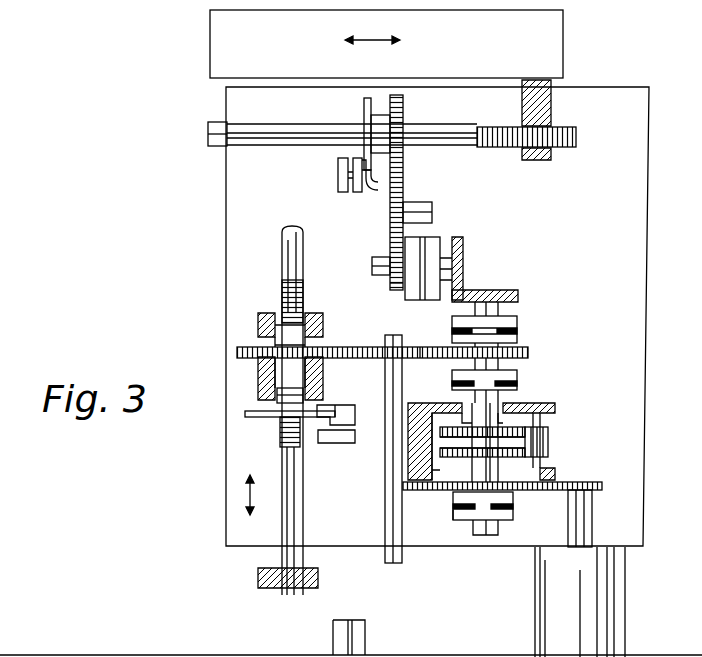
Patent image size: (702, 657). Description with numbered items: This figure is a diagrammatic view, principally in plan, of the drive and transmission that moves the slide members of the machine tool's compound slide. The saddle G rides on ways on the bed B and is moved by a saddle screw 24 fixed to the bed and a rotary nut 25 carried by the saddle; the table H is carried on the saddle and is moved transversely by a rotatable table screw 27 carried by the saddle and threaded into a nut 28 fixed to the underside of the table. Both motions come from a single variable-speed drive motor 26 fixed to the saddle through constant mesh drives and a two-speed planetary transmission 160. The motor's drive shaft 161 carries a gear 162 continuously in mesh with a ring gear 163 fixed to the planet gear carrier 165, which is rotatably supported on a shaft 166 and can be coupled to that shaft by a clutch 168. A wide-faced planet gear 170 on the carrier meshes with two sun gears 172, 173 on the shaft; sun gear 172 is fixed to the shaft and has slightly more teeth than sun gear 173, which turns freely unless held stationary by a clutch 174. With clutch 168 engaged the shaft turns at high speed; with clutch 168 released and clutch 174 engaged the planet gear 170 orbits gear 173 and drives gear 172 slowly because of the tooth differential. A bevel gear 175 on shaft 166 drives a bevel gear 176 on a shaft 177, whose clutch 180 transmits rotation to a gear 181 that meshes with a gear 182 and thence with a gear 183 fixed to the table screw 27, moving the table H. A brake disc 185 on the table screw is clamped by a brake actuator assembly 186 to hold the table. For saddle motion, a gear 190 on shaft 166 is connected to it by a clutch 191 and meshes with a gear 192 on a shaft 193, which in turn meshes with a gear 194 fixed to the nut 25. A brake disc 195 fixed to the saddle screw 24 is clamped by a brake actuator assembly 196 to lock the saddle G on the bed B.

The table H is at (209, 40).
The saddle G is at (224, 233).
The bed B is at (257, 578).
The saddle screw 24 is at (282, 247).
The rotary nut 25 is at (277, 392).
The variable-speed drive motor 26 is at (626, 597).
The table screw 27 is at (468, 128).
The nut 28 is at (551, 118).
The two-speed planetary transmission 160 is at (568, 422).
The drive shaft 161 is at (592, 522).
The gear 162 is at (602, 484).
The ring gear 163 is at (553, 492).
The planet gear carrier 165 is at (556, 408).
The shaft 166 is at (476, 536).
The clutch 168 is at (517, 381).
The planet gear 170 is at (549, 440).
The sun gear 172 is at (440, 430).
The sun gear 173 is at (440, 450).
The clutch 174 is at (453, 515).
The bevel gear 175 is at (515, 293).
The bevel gear 176 is at (464, 245).
The shaft 177 is at (372, 266).
The clutch 180 is at (432, 250).
The gear 181 is at (392, 288).
The gear 182 is at (403, 196).
The gear 183 is at (403, 116).
The brake disc 185 is at (363, 110).
The brake actuator assembly 186 is at (338, 178).
The gear 190 is at (528, 352).
The clutch 191 is at (517, 325).
The gear 192 is at (421, 347).
The shaft 193 is at (385, 380).
The gear 194 is at (258, 341).
The brake disc 195 is at (262, 418).
The brake actuator assembly 196 is at (330, 444).